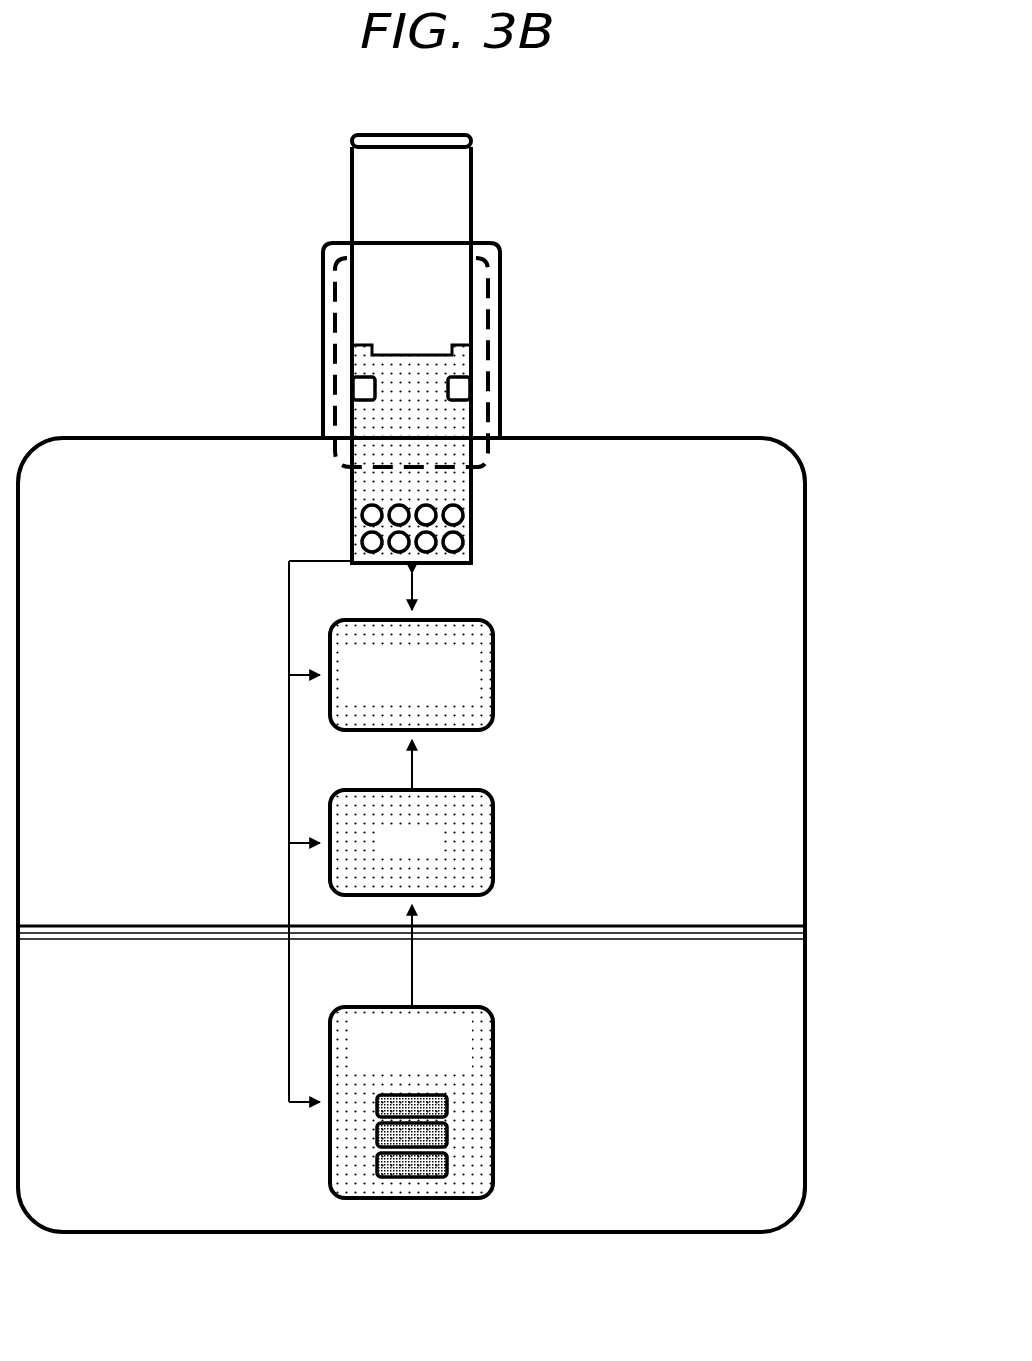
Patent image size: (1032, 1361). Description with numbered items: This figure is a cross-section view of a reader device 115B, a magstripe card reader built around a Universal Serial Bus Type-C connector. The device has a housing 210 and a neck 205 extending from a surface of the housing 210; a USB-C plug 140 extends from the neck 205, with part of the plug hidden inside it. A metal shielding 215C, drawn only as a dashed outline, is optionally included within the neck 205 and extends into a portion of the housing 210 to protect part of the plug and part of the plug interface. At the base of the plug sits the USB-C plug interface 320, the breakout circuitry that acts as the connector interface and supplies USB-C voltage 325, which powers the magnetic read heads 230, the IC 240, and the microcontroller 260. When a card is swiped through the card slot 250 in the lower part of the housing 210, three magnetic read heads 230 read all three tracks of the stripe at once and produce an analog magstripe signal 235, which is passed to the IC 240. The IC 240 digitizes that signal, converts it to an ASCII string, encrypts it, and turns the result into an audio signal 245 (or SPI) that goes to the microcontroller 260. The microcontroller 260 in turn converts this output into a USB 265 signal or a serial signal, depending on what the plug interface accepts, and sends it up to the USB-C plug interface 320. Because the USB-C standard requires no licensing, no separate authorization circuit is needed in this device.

The USB-C plug 140 is at (293, 245).
The neck 205 is at (546, 245).
The reader device 115B is at (821, 1235).
The housing 210 is at (851, 1232).
The metal shielding 215C is at (320, 467).
The USB-C plug interface 320 is at (700, 528).
The USB signal 265 is at (490, 606).
The USB-C voltage 325 is at (282, 697).
The microcontroller 260 is at (427, 696).
The audio signal 245 is at (552, 775).
The integrated circuit 240 is at (437, 853).
The analog magnetic stripe signal 235 is at (650, 976).
The magnetic read heads 230 is at (453, 1066).
The card slot 250 is at (156, 1100).